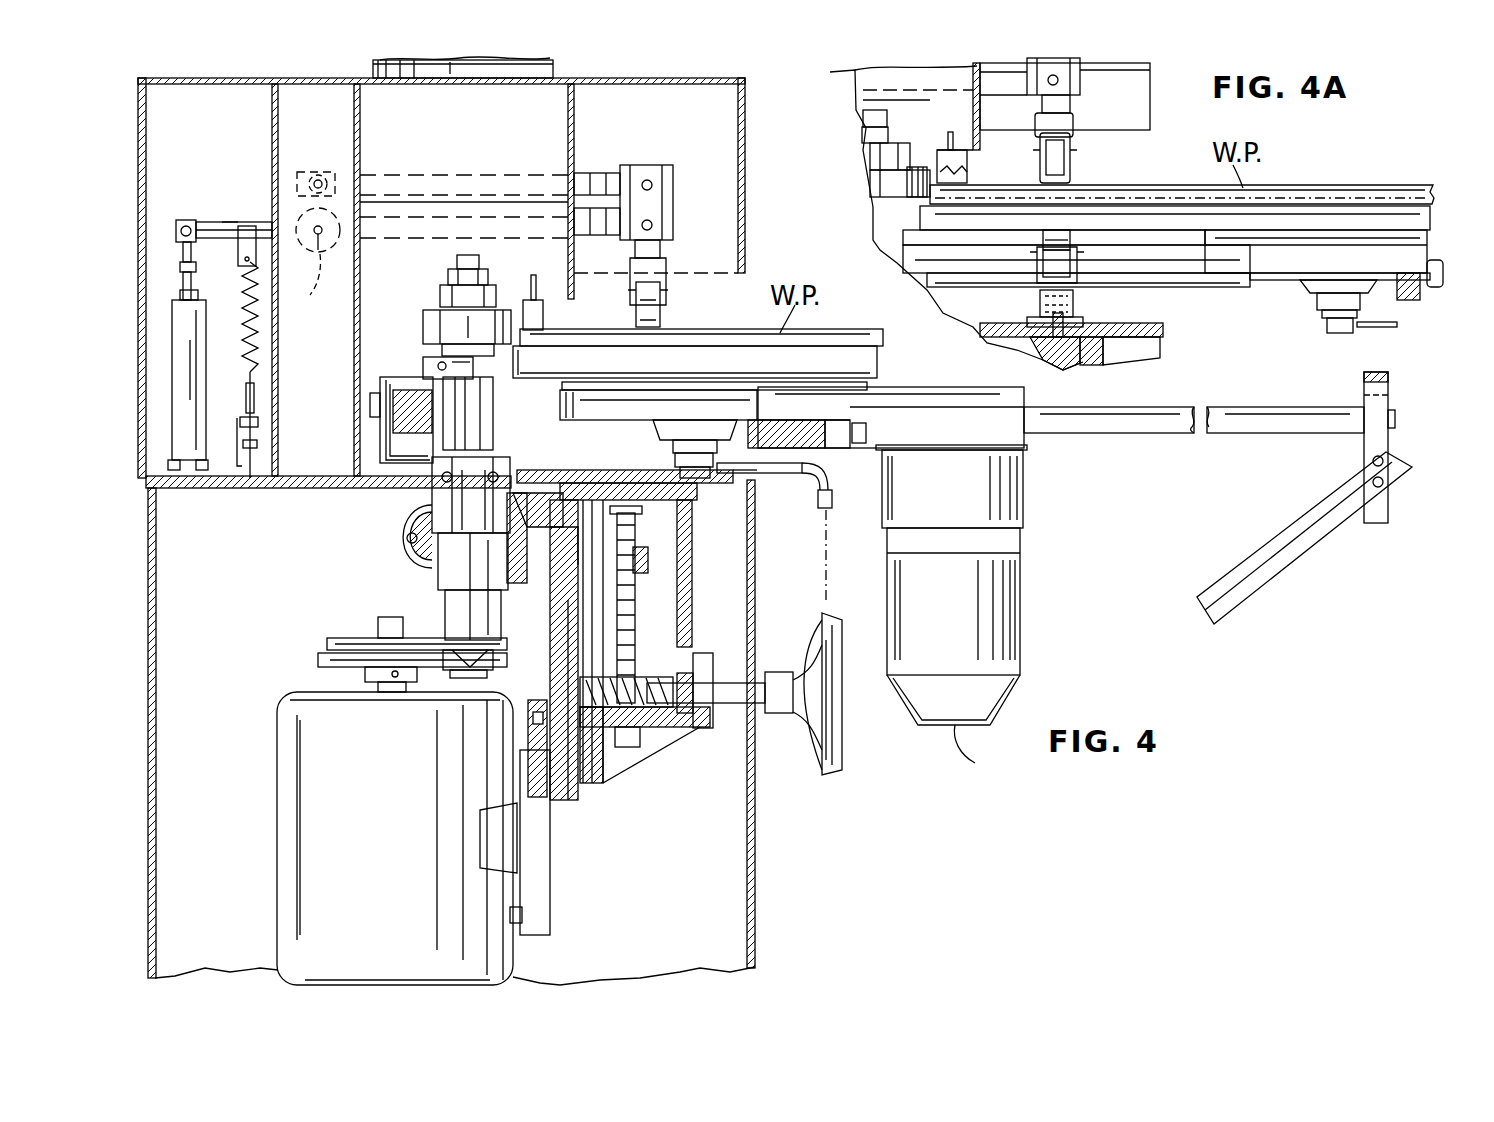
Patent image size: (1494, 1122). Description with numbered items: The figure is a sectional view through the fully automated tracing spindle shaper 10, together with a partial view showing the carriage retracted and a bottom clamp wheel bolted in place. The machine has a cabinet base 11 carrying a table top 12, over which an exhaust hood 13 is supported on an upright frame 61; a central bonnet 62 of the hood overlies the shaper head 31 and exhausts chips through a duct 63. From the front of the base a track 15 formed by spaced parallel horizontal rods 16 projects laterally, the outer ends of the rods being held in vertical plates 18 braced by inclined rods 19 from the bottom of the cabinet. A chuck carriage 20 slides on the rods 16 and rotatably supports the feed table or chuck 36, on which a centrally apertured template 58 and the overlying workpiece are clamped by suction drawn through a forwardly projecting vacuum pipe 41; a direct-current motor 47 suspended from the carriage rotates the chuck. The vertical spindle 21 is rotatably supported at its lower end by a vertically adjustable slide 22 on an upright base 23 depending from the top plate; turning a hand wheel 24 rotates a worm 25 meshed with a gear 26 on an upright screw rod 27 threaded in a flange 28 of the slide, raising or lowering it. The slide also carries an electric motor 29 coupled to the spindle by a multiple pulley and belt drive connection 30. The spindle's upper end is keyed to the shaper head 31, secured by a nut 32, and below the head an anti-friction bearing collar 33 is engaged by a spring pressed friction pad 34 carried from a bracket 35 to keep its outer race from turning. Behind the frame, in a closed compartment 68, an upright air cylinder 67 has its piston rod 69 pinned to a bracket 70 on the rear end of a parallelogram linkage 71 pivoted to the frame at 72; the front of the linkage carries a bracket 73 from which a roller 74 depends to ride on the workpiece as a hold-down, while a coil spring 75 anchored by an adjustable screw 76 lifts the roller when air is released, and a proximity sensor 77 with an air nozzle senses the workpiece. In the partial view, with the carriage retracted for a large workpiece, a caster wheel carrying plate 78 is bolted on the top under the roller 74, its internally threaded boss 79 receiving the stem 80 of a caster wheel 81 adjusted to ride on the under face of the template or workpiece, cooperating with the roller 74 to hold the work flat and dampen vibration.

In FIG. 4, the tracing spindle shaper 10 is at (148, 770).
In FIG. 4, the cabinet base 11 is at (757, 855).
In FIG. 4, the table top 12 is at (530, 470).
In FIG. 4A, the table top 12 is at (1150, 328).
In FIG. 4, the exhaust hood 13 is at (745, 133).
In FIG. 4, the track 15 is at (1262, 406).
In FIG. 4, the horizontal rods 16 is at (1225, 406).
In FIG. 4, the vertical plates 18 is at (1366, 452).
In FIG. 4, the inclined rods 19 is at (1302, 554).
In FIG. 4, the chuck carriage 20 is at (909, 392).
In FIG. 4, the vertical spindle 21 is at (462, 508).
In FIG. 4, the vertically adjustable slide 22 is at (560, 800).
In FIG. 4, the upright base 23 is at (633, 752).
In FIG. 4, the hand wheel 24 is at (843, 762).
In FIG. 4, the worm 25 is at (655, 678).
In FIG. 4, the gear 26 is at (600, 680).
In FIG. 4, the upright screw rod 27 is at (637, 607).
In FIG. 4, the flange 28 is at (640, 550).
In FIG. 4, the electric motor 29 is at (280, 742).
In FIG. 4, the pulley and belt drive connection 30 is at (327, 644).
In FIG. 4, the shaper head 31 is at (440, 322).
In FIG. 4A, the shaper head 31 is at (907, 152).
In FIG. 4, the nut 32 is at (490, 286).
In FIG. 4, the bearing collar 33 is at (423, 366).
In FIG. 4, the friction pad 34 is at (395, 378).
In FIG. 4, the bracket 35 is at (385, 452).
In FIG. 4, the chuck 36 is at (823, 382).
In FIG. 4A, the chuck 36 is at (1224, 232).
In FIG. 4, the vacuum pipe 41 is at (787, 474).
In FIG. 4, the chuck motor 47 is at (1022, 533).
In FIG. 4, the template 58 is at (812, 348).
In FIG. 4A, the template 58 is at (1303, 202).
In FIG. 4, the upright frame 61 is at (272, 146).
In FIG. 4, the central bonnet 62 is at (575, 140).
In FIG. 4, the duct 63 is at (370, 74).
In FIG. 4, the air cylinder 67 is at (175, 386).
In FIG. 4, the closed compartment 68 is at (249, 189).
In FIG. 4, the piston rod 69 is at (183, 268).
In FIG. 4, the bracket 70 is at (208, 228).
In FIG. 4, the parallelogram linkage 71 is at (346, 240).
In FIG. 4, the pivot 72 is at (310, 248).
In FIG. 4, the bracket 73 is at (684, 182).
In FIG. 4A, the bracket 73 is at (1080, 90).
In FIG. 4, the roller 74 is at (662, 304).
In FIG. 4A, the roller 74 is at (1073, 164).
In FIG. 4, the coil spring 75 is at (256, 326).
In FIG. 4, the adjustable screw 76 is at (250, 480).
In FIG. 4, the proximity sensor 77 is at (543, 314).
In FIG. 4A, the proximity sensor 77 is at (965, 163).
In FIG. 4A, the caster wheel carrying plate 78 is at (1082, 323).
In FIG. 4A, the threaded boss 79 is at (1040, 305).
In FIG. 4A, the stem 80 is at (1043, 287).
In FIG. 4A, the caster wheel 81 is at (1070, 244).